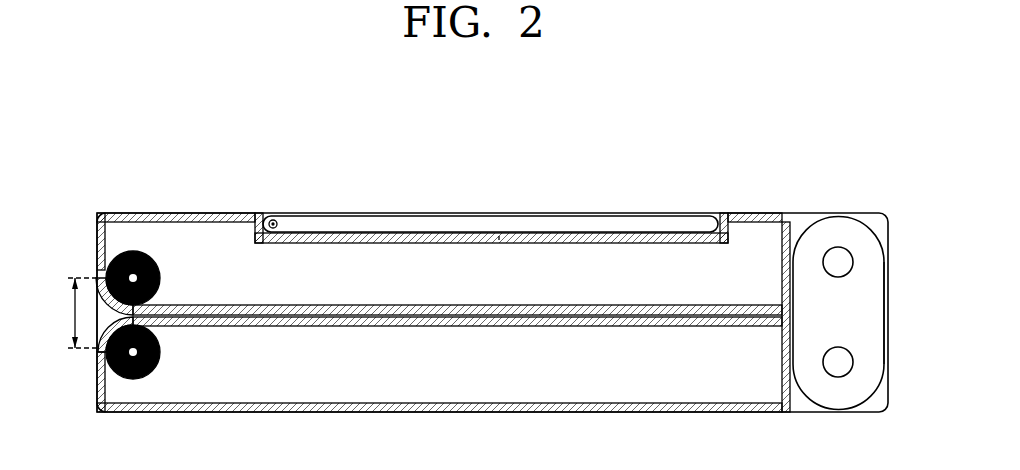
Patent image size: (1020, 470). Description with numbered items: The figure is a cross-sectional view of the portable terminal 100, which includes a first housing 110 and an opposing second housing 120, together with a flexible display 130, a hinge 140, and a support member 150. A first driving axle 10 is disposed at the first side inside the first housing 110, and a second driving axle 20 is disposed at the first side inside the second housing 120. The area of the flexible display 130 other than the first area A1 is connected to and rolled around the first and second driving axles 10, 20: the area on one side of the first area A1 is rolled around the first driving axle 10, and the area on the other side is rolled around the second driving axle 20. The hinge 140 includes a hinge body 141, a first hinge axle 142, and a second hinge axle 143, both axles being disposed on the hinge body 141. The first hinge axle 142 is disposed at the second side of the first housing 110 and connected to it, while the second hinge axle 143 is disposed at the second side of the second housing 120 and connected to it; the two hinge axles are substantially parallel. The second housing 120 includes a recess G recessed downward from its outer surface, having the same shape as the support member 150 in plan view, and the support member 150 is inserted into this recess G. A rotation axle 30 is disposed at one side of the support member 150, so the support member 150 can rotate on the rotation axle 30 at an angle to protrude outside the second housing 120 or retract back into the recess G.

The portable terminal 100 is at (651, 163).
The first housing 110 is at (440, 413).
The second housing 120 is at (187, 213).
The flexible display 130 is at (97, 314).
The hinge 140 is at (898, 152).
The hinge body 141 is at (813, 237).
The first hinge axle 142 is at (838, 347).
The second hinge axle 143 is at (838, 250).
The support member 150 is at (545, 214).
The rotation axle 30 is at (275, 220).
The second driving axle 20 is at (135, 252).
The first driving axle 10 is at (131, 378).
The recess G is at (499, 240).
The first area A1 is at (71, 313).